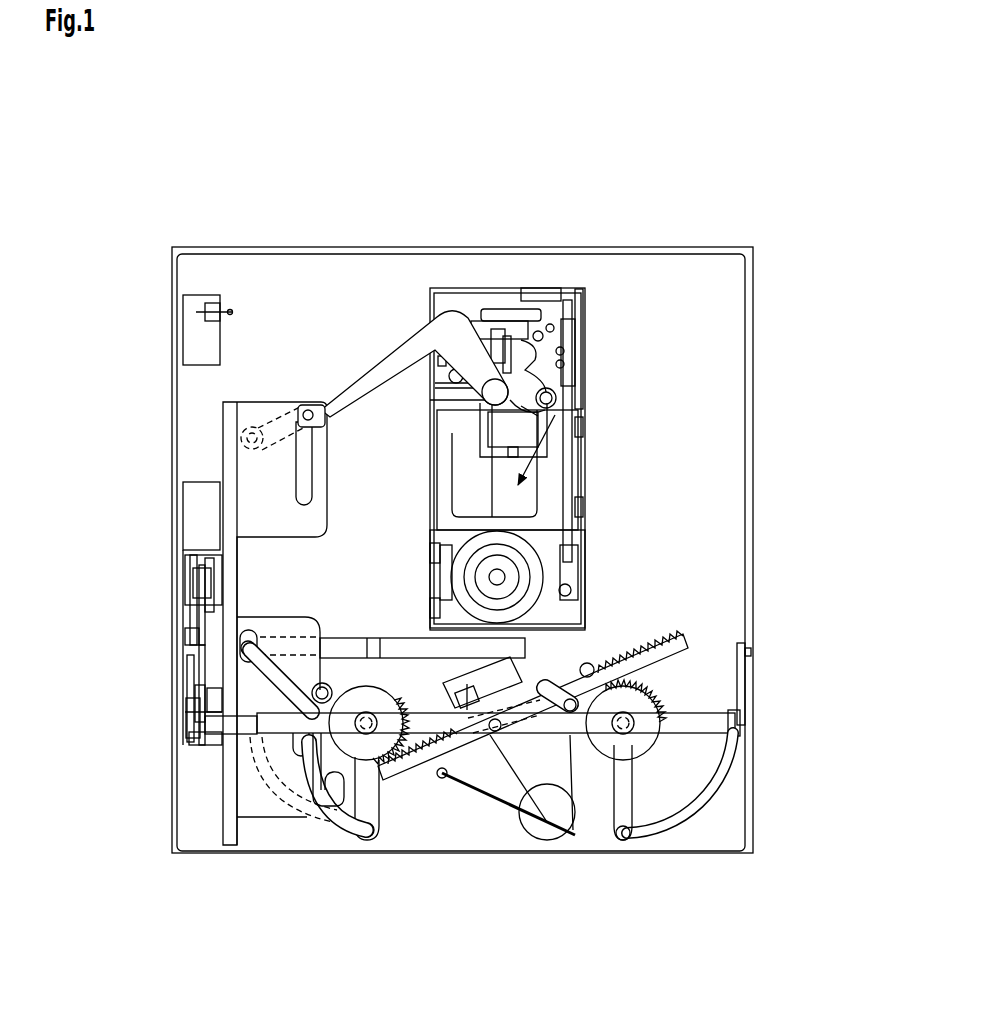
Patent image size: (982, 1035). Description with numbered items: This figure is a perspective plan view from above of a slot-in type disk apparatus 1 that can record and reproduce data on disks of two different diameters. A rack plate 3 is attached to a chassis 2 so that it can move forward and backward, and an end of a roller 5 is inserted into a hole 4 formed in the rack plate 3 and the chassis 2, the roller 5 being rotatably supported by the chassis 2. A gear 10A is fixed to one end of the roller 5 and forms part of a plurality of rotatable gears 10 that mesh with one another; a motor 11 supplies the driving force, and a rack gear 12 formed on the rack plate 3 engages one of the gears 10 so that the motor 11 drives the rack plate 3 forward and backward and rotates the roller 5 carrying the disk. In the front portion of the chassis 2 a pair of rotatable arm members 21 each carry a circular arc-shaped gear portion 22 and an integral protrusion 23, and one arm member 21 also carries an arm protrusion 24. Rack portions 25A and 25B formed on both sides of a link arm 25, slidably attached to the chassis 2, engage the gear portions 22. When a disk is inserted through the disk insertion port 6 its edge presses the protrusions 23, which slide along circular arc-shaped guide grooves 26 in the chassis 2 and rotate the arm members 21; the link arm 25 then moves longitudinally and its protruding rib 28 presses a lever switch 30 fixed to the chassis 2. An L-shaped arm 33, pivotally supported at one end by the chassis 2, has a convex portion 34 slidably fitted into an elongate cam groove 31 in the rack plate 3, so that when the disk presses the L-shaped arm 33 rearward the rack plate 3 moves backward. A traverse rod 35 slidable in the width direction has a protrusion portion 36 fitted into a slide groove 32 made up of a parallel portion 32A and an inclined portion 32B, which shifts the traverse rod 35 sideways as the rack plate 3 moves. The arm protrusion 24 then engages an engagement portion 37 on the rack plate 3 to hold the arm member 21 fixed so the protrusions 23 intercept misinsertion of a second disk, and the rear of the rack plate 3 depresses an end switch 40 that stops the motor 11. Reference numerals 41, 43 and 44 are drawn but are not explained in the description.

The disk apparatus 1 is at (727, 215).
The chassis 2 is at (728, 387).
The rack plate 3 is at (212, 420).
The hole 4 is at (175, 738).
The roller 5 is at (711, 718).
The disk insertion port 6 is at (547, 840).
The gears 10 is at (195, 565).
The gear 10A is at (230, 718).
The motor 11 is at (200, 510).
The rack gear 12 is at (200, 590).
The arm member 21 is at (372, 762).
The gear portion 22 is at (690, 680).
The protrusion 23 is at (345, 802).
The arm protrusion 24 is at (308, 705).
The link arm 25 is at (695, 633).
The rack portion 25A is at (473, 752).
The rack portion 25B is at (690, 660).
The guide groove 26 is at (358, 838).
The protruding rib 28 is at (623, 840).
The lever switch 30 is at (500, 645).
The cam groove 31 is at (300, 468).
The slide groove 32 is at (265, 688).
The parallel portion 32A is at (253, 632).
The inclined portion 32B is at (285, 690).
The L-shaped arm 33 is at (367, 372).
The convex portion 34 is at (306, 405).
The traverse rod 35 is at (343, 650).
The protrusion portion 36 is at (240, 648).
The engagement portion 37 is at (391, 838).
The end switch 40 is at (226, 312).
The drive unit 41 is at (584, 290).
The motor 43 is at (548, 588).
The rod 44 is at (567, 832).